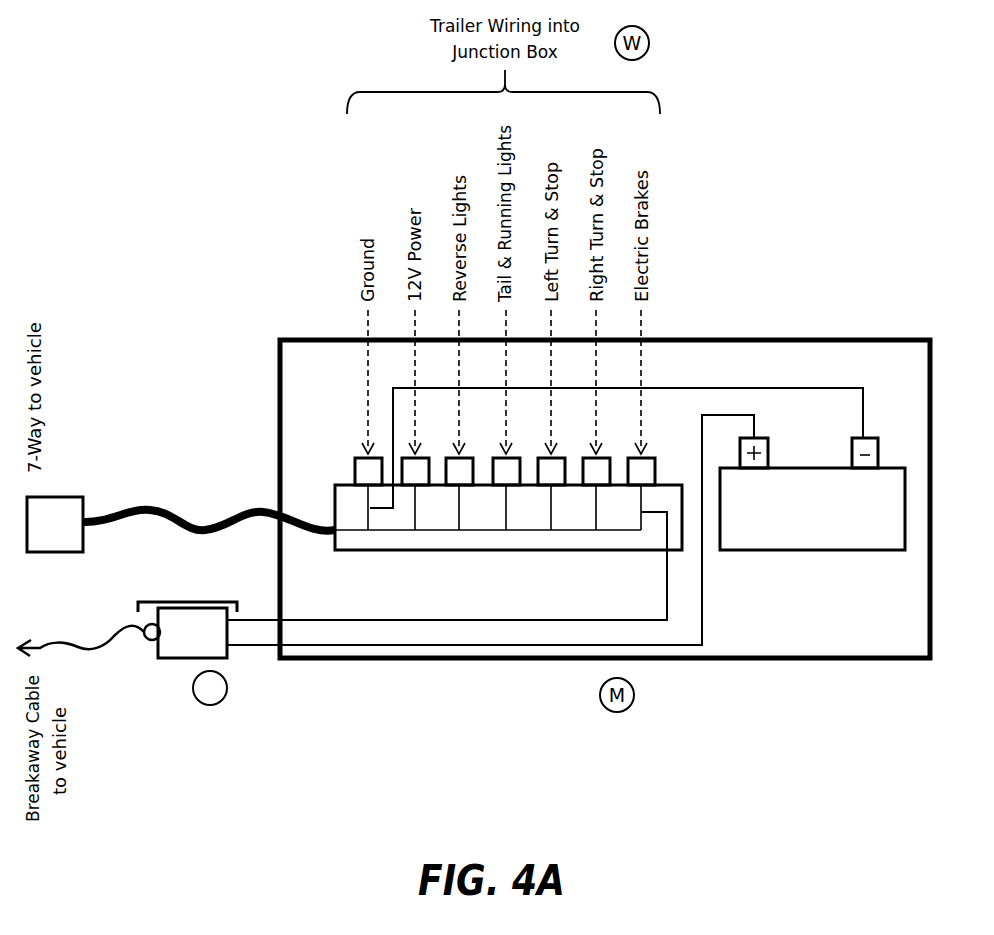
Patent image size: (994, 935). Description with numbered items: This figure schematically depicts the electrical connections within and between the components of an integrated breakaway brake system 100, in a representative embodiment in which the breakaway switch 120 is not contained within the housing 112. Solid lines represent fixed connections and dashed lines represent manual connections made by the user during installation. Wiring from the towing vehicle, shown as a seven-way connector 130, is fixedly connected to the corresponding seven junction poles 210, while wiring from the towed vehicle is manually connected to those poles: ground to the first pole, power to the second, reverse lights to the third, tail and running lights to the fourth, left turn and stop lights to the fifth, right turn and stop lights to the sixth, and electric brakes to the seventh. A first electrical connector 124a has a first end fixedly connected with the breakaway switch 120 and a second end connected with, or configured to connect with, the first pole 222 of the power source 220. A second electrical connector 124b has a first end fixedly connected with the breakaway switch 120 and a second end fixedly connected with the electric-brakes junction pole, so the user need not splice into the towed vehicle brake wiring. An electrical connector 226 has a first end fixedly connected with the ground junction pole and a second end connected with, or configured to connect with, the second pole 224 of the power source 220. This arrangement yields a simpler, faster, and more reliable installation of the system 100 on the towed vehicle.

The integrated breakaway brake system 100 is at (779, 247).
The housing 112 is at (857, 662).
The breakaway switch 120 is at (192, 660).
The first electrical connector 124a is at (482, 647).
The second electrical connector 124b is at (413, 622).
The 7-way connector 130 is at (62, 493).
The junction poles 210 is at (470, 553).
The power source 220 is at (812, 509).
The first pole 222 is at (772, 441).
The second pole 224 is at (877, 438).
The electrical connector 226 is at (752, 388).